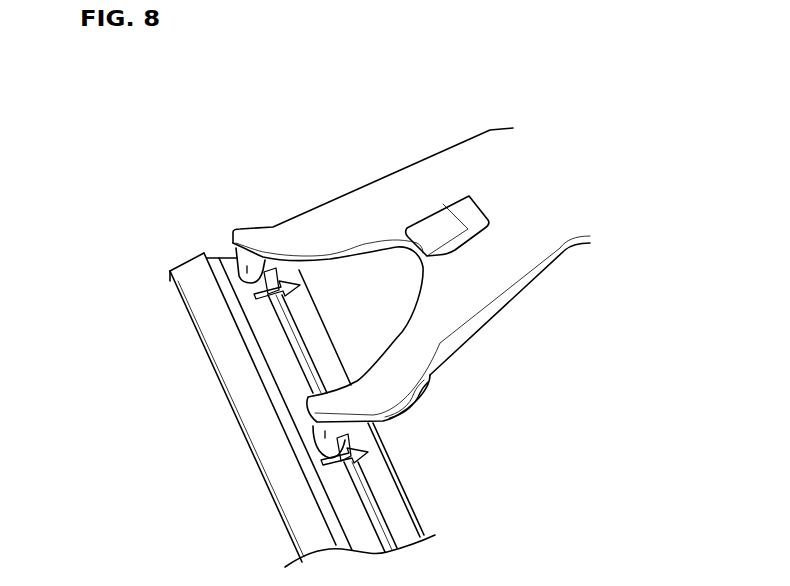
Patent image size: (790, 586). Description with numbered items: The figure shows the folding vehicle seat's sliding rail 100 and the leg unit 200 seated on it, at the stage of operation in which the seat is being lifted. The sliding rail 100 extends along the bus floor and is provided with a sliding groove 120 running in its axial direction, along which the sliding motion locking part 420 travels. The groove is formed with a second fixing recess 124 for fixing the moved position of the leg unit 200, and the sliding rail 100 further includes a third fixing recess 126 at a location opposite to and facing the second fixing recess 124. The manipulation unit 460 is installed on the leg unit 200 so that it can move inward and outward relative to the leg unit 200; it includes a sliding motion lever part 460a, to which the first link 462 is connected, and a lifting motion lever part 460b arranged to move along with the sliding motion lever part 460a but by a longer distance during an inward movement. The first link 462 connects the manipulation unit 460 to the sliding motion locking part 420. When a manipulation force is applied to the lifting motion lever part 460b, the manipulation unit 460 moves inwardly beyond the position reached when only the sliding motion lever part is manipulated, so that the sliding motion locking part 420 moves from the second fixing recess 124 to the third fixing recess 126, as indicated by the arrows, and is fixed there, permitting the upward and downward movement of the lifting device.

The sliding rail 100 is at (219, 425).
The sliding groove 120 is at (352, 512).
The second fixing recess 124 is at (325, 437).
The third fixing recess 126 is at (275, 270).
The leg unit 200 is at (521, 288).
The sliding motion locking part 420 is at (246, 266).
The manipulation unit 460 is at (390, 82).
The sliding motion lever part 460a is at (443, 208).
The lifting motion lever part 460b is at (420, 230).
The first link 462 is at (423, 397).